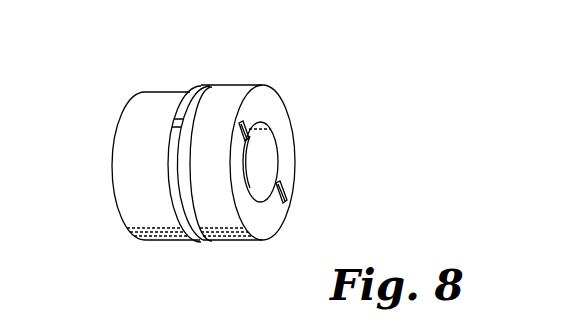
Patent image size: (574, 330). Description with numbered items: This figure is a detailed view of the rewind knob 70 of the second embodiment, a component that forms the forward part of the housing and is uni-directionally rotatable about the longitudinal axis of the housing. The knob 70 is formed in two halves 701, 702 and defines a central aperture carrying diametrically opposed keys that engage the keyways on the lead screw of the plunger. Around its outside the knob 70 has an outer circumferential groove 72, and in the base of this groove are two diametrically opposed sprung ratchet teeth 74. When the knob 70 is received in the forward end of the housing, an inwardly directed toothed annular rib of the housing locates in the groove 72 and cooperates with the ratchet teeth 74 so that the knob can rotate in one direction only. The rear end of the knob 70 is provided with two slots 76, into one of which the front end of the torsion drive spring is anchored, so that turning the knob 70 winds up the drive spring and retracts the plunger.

The rewind knob 70 is at (158, 61).
The first half of the knob 701 is at (127, 196).
The second half of the knob 702 is at (190, 279).
The outer circumferential groove 72 is at (200, 232).
The sprung ratchet teeth 74 is at (192, 100).
The slots 76 is at (287, 200).